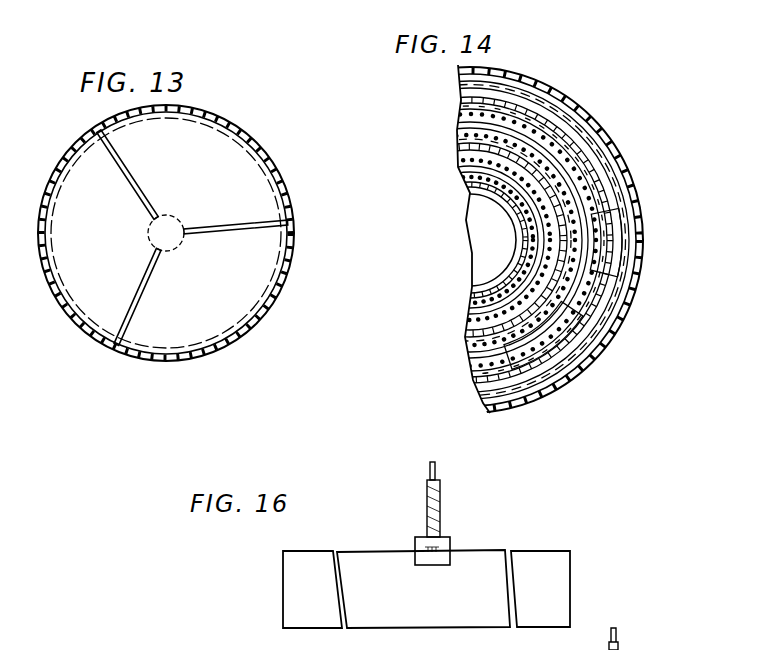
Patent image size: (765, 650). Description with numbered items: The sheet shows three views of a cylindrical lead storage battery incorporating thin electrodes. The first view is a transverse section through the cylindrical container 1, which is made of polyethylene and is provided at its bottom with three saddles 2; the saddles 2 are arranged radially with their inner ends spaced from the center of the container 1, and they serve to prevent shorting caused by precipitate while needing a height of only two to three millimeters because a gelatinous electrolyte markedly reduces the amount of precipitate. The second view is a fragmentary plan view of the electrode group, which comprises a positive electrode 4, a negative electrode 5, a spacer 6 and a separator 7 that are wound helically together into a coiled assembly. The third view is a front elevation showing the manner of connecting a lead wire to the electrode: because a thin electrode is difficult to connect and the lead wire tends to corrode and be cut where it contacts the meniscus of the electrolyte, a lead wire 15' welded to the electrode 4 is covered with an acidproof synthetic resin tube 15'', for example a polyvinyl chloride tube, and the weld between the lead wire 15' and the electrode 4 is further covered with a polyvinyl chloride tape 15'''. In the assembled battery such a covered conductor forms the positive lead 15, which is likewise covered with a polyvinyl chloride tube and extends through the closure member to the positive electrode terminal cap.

In FIG. 13, the cylindrical container 1 is at (183, 357).
In FIG. 13, the saddles 2 is at (256, 224).
In FIG. 14, the positive electrode 4 is at (580, 303).
In FIG. 16, the positive electrode 4 is at (542, 560).
In FIG. 14, the negative electrode 5 is at (592, 172).
In FIG. 14, the spacer 6 is at (522, 176).
In FIG. 14, the separator 7 is at (597, 276).
In FIG. 16, the positive lead 15 is at (636, 639).
In FIG. 16, the lead wire 15' is at (456, 477).
In FIG. 16, the acidproof synthetic resin tube 15'' is at (458, 508).
In FIG. 16, the polyvinyl chloride tape 15''' is at (458, 538).